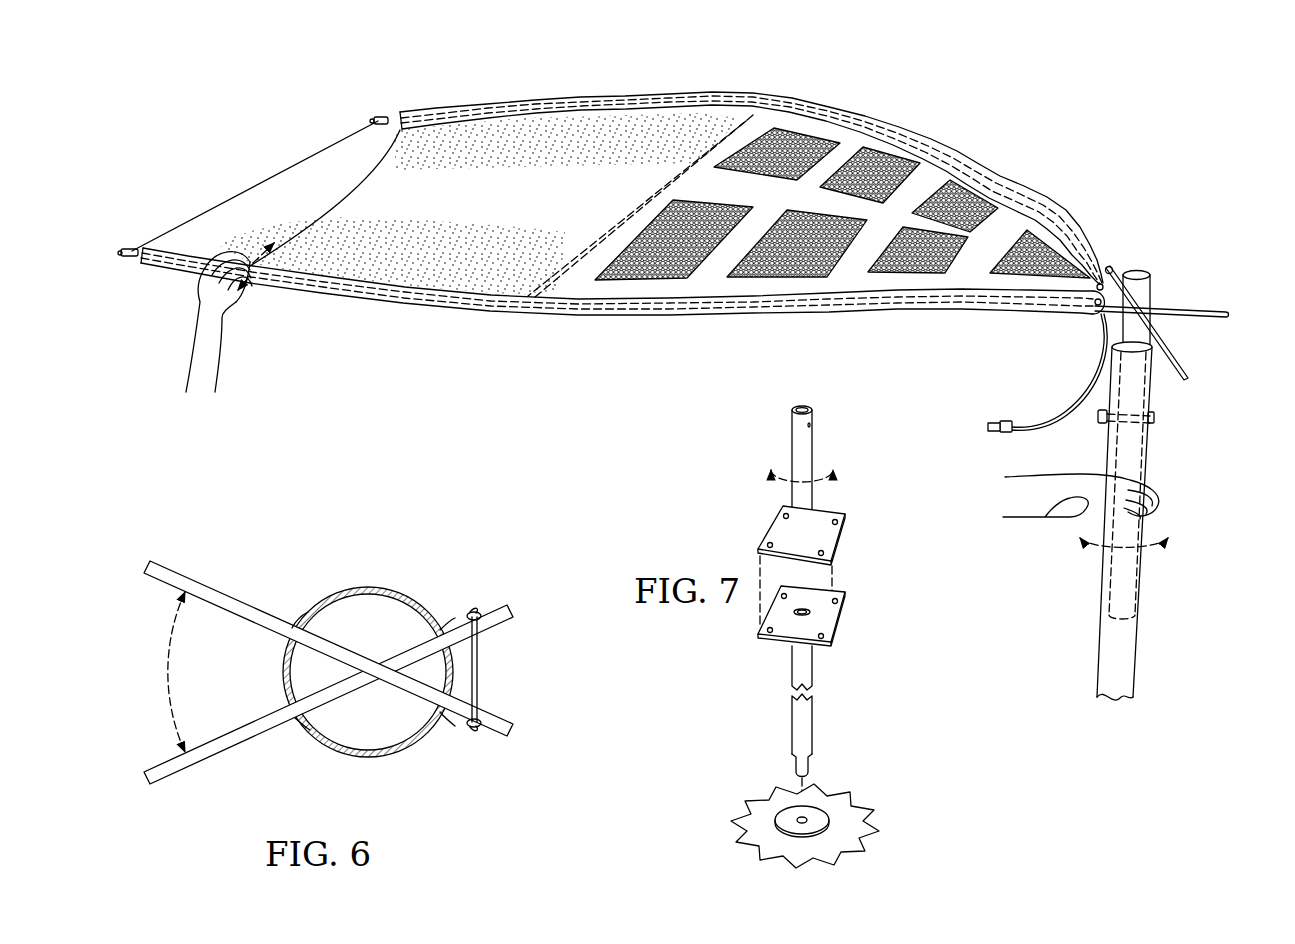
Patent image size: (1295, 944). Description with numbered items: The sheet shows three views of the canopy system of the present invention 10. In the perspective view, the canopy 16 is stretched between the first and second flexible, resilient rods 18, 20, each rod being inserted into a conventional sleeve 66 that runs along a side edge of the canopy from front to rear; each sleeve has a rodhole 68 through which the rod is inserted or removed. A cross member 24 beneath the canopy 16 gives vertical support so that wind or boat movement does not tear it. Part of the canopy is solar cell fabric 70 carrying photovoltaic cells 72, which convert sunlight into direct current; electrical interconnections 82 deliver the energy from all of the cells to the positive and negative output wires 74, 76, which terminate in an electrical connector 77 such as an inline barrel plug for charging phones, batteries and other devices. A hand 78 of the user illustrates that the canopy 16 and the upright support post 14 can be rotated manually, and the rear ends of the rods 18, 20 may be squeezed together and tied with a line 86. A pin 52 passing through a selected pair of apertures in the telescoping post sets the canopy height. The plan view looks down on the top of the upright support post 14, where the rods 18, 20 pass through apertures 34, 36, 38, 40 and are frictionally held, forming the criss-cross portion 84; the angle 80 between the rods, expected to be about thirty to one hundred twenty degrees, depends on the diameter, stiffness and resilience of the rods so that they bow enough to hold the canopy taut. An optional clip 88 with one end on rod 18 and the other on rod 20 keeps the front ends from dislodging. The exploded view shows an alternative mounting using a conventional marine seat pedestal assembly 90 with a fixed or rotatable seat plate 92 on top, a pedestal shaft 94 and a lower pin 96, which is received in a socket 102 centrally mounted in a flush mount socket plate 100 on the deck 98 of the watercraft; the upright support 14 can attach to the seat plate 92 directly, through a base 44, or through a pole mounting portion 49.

In FIG. 5, the present invention 10 is at (1071, 112).
In FIG. 5, the upright support post 14 is at (1138, 486).
In FIG. 6, the upright support post 14 is at (368, 586).
In FIG. 7, the upright support post 14 is at (842, 473).
In FIG. 5, the canopy 16 is at (475, 202).
In FIG. 5, the first side frame member 18 is at (793, 101).
In FIG. 6, the first side frame member 18 is at (237, 606).
In FIG. 5, the second side frame member 20 is at (658, 310).
In FIG. 6, the second side frame member 20 is at (225, 744).
In FIG. 5, the cross member 24 is at (720, 131).
In FIG. 6, the aperture 34 is at (298, 626).
In FIG. 6, the aperture 36 is at (448, 716).
In FIG. 6, the aperture 38 is at (298, 720).
In FIG. 6, the aperture 40 is at (447, 626).
In FIG. 7, the base 44 is at (847, 541).
In FIG. 7, the pole mounting portion 49 is at (808, 436).
In FIG. 5, the pin 52 is at (1098, 418).
In FIG. 5, the sleeve 66 is at (623, 207).
In FIG. 5, the rodhole 68 is at (1111, 266).
In FIG. 5, the solar cell fabric 70 is at (838, 214).
In FIG. 5, the photovoltaic cell 72 is at (826, 145).
In FIG. 5, the positive polarity output wire 74 is at (1028, 373).
In FIG. 5, the negative polarity output wire 76 is at (1028, 373).
In FIG. 5, the electrical connector 77 is at (1001, 422).
In FIG. 5, the hand 78 is at (218, 307).
In FIG. 6, the angle 80 is at (168, 677).
In FIG. 5, the electrical interconnections 82 is at (922, 195).
In FIG. 6, the criss-cross portion 84 is at (382, 646).
In FIG. 5, the line 86 is at (252, 186).
In FIG. 6, the clip 88 is at (478, 670).
In FIG. 7, the marine seat pedestal assembly 90 is at (712, 704).
In FIG. 7, the seat plate 92 is at (848, 620).
In FIG. 7, the pedestal shaft 94 is at (813, 665).
In FIG. 7, the pin 96 is at (810, 768).
In FIG. 7, the deck 98 is at (814, 811).
In FIG. 7, the socket plate 100 is at (767, 808).
In FIG. 7, the socket 102 is at (798, 823).